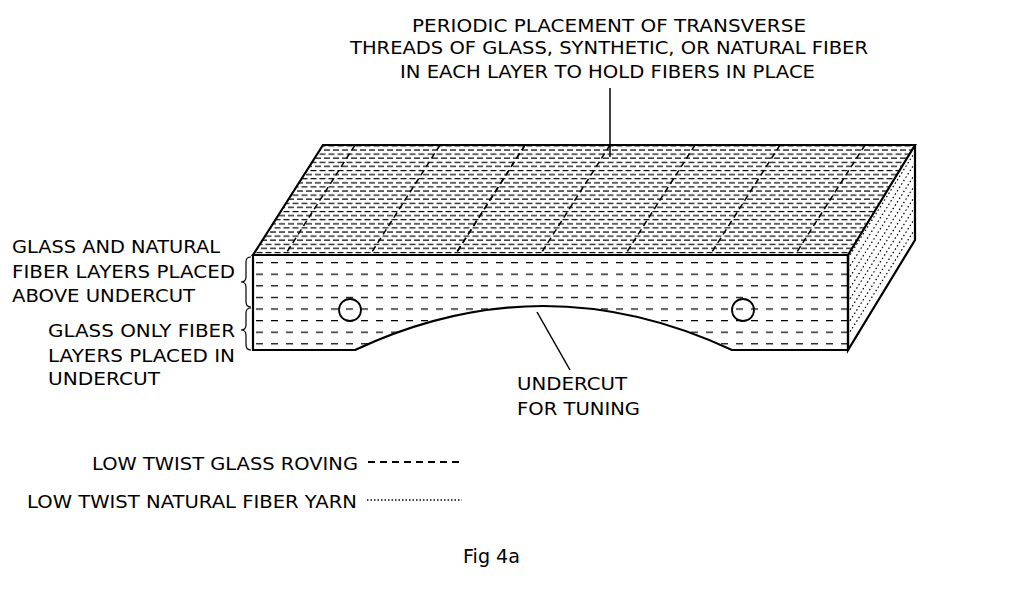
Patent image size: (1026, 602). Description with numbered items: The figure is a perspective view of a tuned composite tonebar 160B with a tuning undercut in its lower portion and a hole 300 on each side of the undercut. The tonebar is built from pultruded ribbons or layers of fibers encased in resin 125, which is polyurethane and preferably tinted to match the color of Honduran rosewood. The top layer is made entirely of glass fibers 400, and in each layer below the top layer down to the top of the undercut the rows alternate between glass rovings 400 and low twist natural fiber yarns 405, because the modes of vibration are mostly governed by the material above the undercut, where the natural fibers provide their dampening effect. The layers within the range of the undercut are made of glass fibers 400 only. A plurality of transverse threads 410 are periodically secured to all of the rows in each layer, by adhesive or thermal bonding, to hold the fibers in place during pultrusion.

The molded and tuned composite tonebar 160B is at (291, 194).
The hole 300 is at (358, 318).
The glass yarn 400 is at (326, 157).
The natural fiber yarn 405 is at (848, 256).
The transverse threads 410 is at (525, 157).
The resin 125 is at (880, 145).